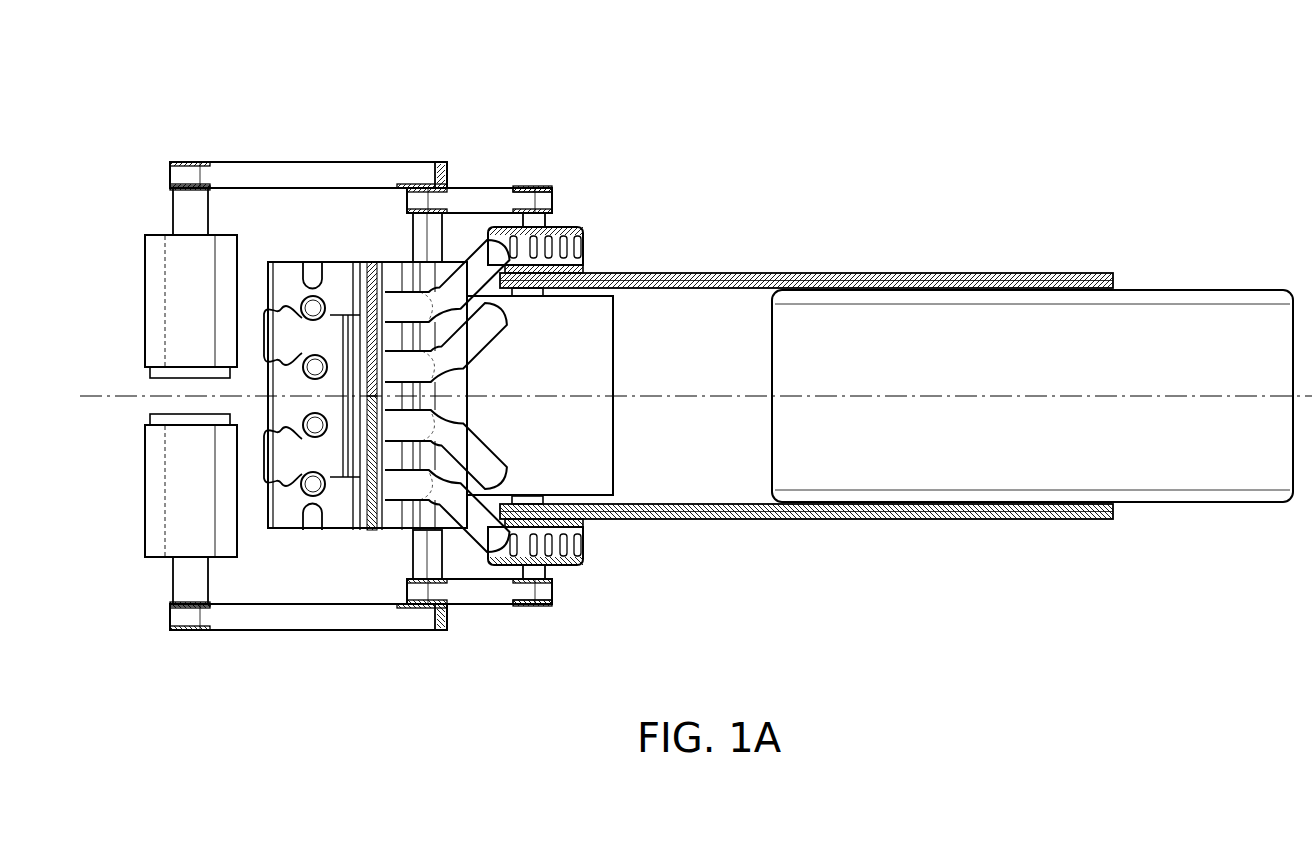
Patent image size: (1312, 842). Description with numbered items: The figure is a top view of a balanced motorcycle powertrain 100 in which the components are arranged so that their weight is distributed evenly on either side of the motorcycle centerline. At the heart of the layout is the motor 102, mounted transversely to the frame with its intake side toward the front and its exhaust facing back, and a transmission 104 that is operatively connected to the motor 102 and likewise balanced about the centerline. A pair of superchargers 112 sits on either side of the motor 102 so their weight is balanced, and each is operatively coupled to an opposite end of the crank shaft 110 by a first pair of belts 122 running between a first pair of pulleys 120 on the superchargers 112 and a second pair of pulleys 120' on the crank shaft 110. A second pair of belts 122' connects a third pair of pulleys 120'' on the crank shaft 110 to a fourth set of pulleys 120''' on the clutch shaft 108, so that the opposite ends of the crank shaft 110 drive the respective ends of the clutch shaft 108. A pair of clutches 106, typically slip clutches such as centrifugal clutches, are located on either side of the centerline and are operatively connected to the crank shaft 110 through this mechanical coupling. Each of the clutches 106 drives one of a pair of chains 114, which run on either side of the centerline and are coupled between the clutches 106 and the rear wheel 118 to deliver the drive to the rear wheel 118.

The motorcycle powertrain 100 is at (127, 85).
The motor 102 is at (293, 262).
The transmission 104 is at (614, 337).
The pair of clutches 106 is at (577, 228).
The clutch shaft 108 is at (547, 570).
The crank shaft 110 is at (442, 553).
The pair of superchargers 112 is at (145, 300).
The pair of chains 114 is at (880, 273).
The rear wheel 118 is at (1190, 290).
The first pair of pulleys 120 is at (191, 397).
The second pair of pulleys 120' is at (456, 401).
The third pair of pulleys 120'' is at (407, 396).
The fourth set of pulleys 120''' is at (571, 404).
The first pair of belts 122 is at (308, 395).
The second pair of belts 122' is at (483, 404).